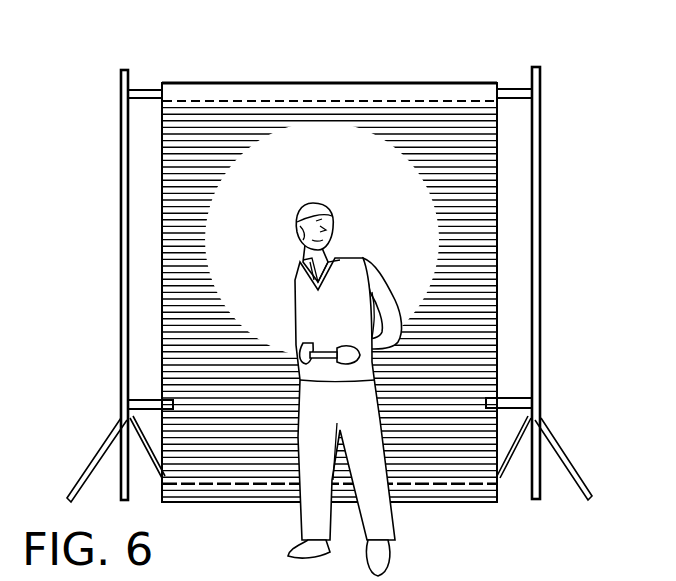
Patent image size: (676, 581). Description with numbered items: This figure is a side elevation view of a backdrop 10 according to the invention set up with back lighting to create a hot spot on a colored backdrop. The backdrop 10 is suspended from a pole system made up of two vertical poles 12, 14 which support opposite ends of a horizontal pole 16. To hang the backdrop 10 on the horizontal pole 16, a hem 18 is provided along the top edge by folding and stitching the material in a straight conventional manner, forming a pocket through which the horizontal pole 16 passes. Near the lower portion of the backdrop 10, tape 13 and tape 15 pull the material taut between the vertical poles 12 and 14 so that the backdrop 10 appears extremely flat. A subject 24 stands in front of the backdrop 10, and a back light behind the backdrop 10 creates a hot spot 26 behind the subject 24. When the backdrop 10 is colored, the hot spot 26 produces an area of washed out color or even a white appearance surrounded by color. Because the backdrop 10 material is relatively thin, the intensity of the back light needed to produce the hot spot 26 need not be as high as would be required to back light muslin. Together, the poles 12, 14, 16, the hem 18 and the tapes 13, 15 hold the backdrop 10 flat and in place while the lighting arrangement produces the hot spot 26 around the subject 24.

The backdrop 10 is at (497, 192).
The vertical pole 12 is at (122, 279).
The tape 13 is at (128, 404).
The vertical pole 14 is at (540, 127).
The tape 15 is at (522, 402).
The horizontal pole 16 is at (515, 92).
The hem 18 is at (245, 96).
The subject 24 is at (290, 552).
The hot spot 26 is at (375, 172).